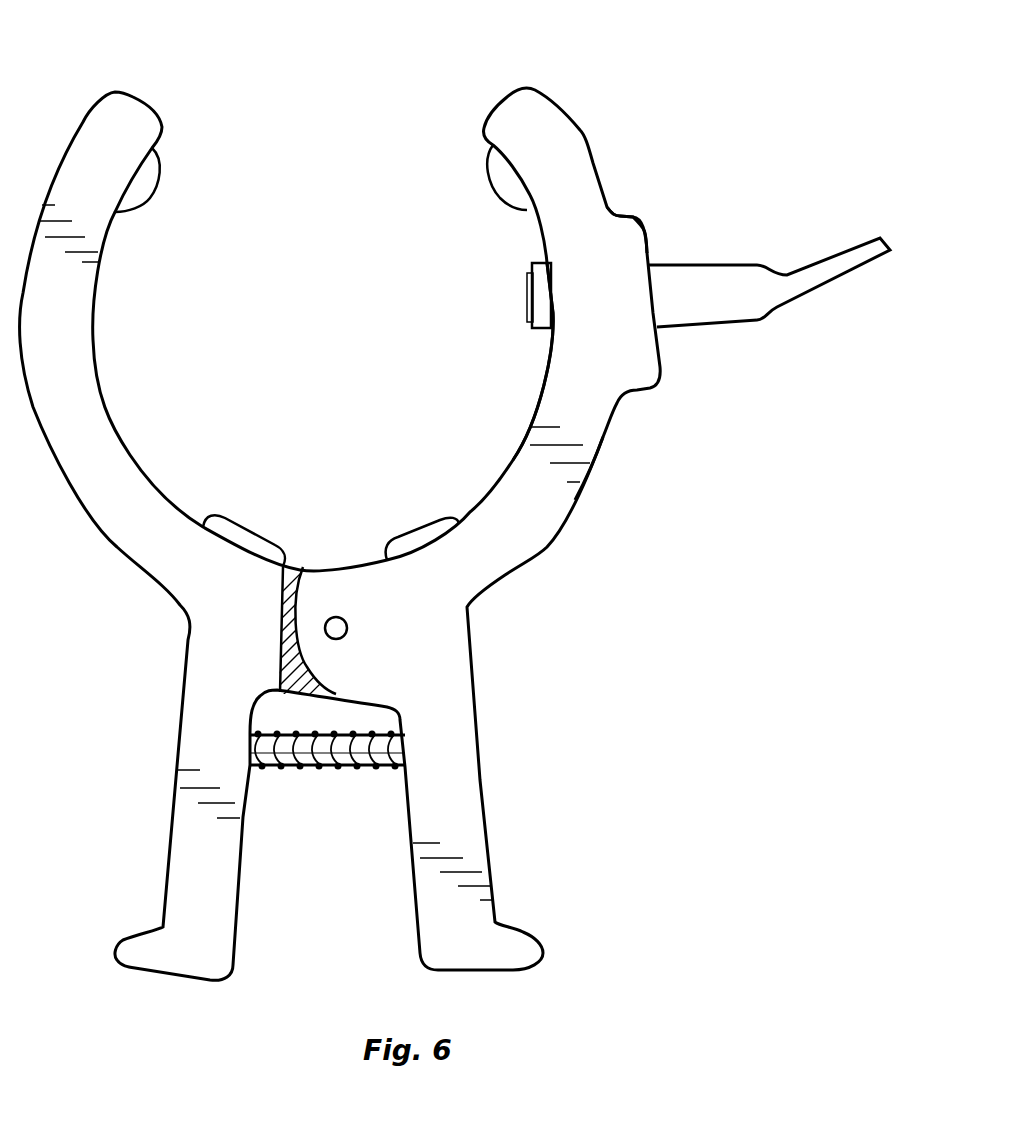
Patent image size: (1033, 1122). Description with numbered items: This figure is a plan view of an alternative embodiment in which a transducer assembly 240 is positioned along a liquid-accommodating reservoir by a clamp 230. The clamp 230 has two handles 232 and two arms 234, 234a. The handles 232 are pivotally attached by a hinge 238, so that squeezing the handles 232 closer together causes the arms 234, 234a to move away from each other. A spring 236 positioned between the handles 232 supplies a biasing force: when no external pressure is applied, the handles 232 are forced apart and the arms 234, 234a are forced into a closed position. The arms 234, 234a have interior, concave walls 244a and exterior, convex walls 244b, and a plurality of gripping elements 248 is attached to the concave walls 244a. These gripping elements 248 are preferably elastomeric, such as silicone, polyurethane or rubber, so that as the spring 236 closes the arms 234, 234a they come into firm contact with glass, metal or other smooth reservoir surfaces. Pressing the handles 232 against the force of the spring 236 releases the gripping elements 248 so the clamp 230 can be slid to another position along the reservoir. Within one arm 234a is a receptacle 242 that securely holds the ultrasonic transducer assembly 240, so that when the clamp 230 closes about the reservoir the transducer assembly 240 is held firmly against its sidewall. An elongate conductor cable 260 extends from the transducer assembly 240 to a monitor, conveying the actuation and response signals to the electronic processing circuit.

The clamp 230 is at (608, 120).
The handles 232 is at (218, 891).
The arm 234 is at (78, 309).
The arm 234a is at (623, 291).
The spring 236 is at (320, 767).
The hinge 238 is at (347, 627).
The transducer assembly 240 is at (527, 298).
The receptacle 242 is at (650, 253).
The interior, concave walls 244a is at (531, 410).
The exterior, convex walls 244b is at (577, 497).
The gripping elements 248 is at (142, 193).
The elongate conductor cable 260 is at (813, 265).